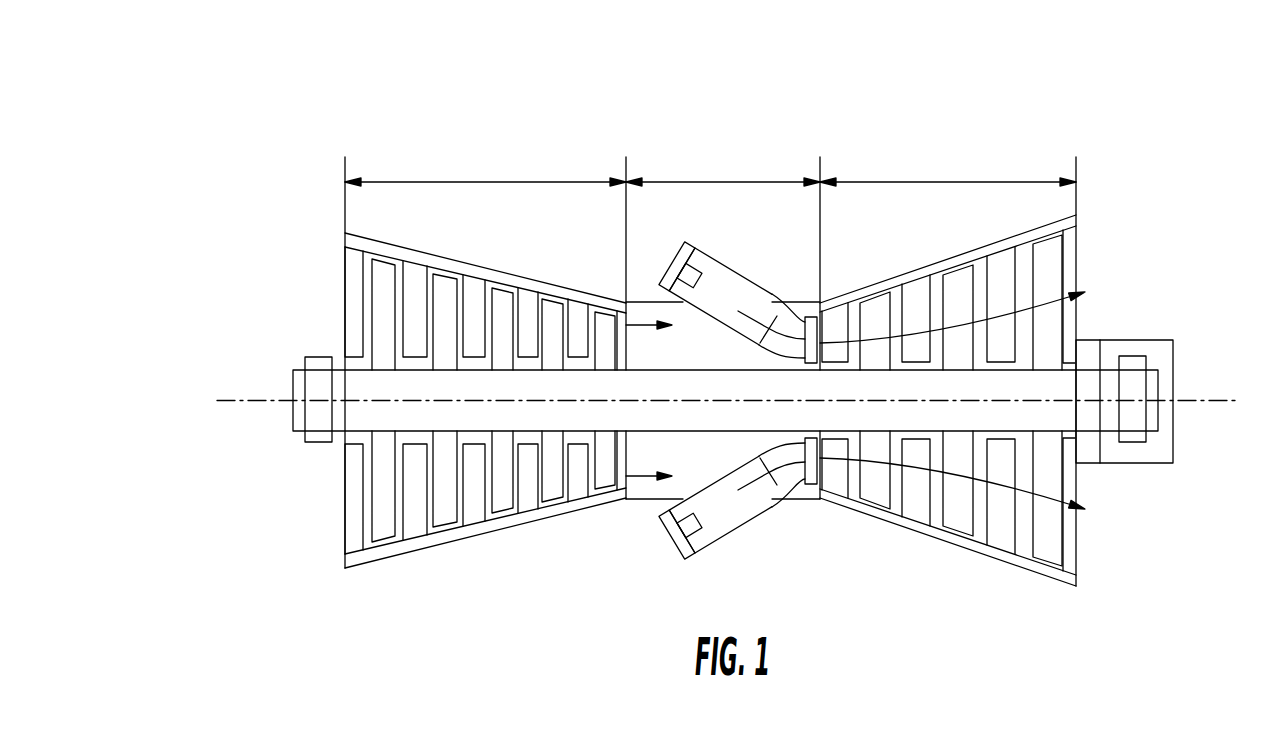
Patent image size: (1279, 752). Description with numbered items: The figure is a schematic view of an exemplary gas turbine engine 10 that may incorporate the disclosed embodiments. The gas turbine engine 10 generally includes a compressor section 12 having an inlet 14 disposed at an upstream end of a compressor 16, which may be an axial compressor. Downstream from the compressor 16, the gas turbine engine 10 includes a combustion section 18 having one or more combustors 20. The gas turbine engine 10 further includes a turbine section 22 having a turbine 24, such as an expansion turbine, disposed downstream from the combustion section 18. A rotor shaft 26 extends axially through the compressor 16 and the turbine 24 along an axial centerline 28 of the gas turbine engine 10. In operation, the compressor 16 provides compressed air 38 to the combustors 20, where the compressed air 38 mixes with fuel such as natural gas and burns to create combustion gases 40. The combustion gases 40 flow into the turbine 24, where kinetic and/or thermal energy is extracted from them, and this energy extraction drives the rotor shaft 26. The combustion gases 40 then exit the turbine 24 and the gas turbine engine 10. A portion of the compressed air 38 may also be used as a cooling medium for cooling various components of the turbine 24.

The gas turbine engine 10 is at (650, 98).
The compressor section 12 is at (486, 182).
The inlet 14 is at (345, 313).
The compressor 16 is at (360, 570).
The combustion section 18 is at (688, 182).
The combustor 20 is at (716, 259).
The turbine section 22 is at (897, 182).
The turbine 24 is at (922, 542).
The rotor shaft 26 is at (662, 371).
The axial centerline 28 is at (260, 400).
The compressed air 38 is at (643, 324).
The combustion gases 40 is at (1042, 300).